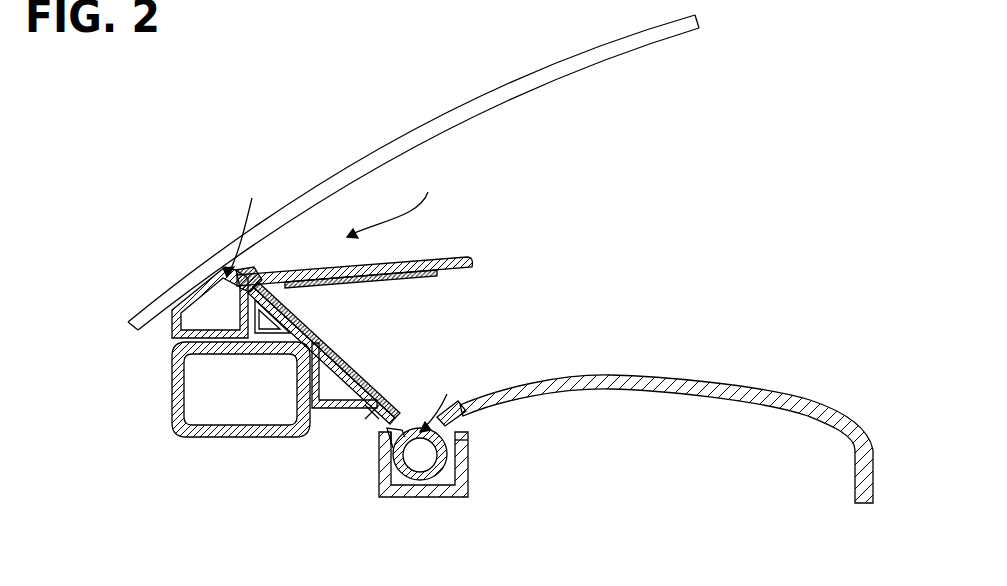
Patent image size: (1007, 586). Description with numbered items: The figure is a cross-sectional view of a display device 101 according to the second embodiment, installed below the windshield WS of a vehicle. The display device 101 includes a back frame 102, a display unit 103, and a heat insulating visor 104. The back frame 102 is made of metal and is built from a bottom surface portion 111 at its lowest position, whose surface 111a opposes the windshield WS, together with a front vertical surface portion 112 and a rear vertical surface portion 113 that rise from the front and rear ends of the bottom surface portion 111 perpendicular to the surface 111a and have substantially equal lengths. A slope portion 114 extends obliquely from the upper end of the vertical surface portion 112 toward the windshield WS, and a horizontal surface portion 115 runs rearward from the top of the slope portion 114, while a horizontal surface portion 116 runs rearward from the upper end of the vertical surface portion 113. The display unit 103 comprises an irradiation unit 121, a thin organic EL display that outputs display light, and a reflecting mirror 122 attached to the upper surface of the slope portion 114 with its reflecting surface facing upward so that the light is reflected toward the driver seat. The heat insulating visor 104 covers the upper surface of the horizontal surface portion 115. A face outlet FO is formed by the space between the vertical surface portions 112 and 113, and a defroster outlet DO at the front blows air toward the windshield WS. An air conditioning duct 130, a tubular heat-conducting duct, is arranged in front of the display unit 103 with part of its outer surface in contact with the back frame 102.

The windshield WS is at (395, 135).
The defroster outlet DO is at (246, 225).
The display device 101 is at (395, 202).
The back frame 102 is at (372, 413).
The display unit 103 is at (384, 344).
The heat insulating visor 104 is at (467, 262).
The bottom surface portion 111 is at (433, 494).
The surface of the bottom surface portion 111a is at (413, 472).
The vertical surface portion 112 is at (378, 485).
The vertical surface portion 113 is at (468, 466).
The slope portion 114 is at (328, 343).
The horizontal surface portion 115 is at (283, 281).
The horizontal surface portion 116 is at (505, 415).
The irradiation unit 121 is at (411, 276).
The reflecting mirror 122 is at (353, 367).
The air conditioning duct 130 is at (170, 410).
The face outlet FO is at (444, 400).